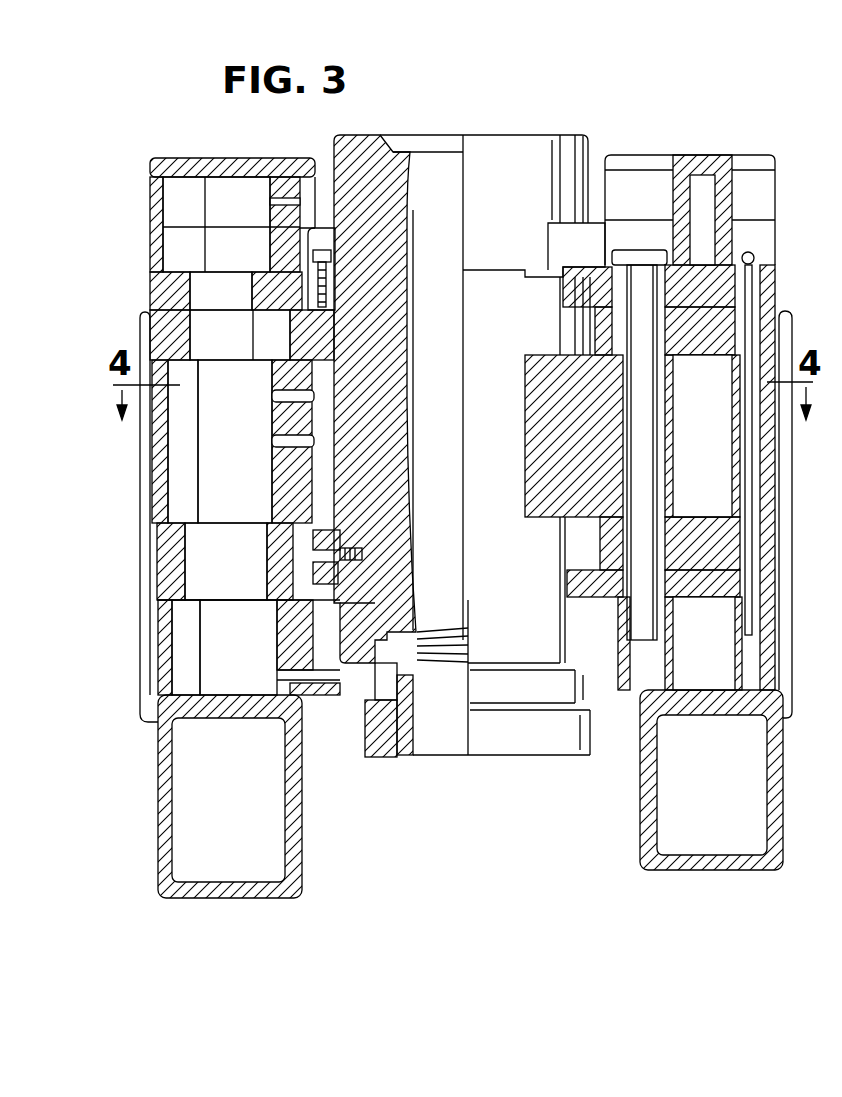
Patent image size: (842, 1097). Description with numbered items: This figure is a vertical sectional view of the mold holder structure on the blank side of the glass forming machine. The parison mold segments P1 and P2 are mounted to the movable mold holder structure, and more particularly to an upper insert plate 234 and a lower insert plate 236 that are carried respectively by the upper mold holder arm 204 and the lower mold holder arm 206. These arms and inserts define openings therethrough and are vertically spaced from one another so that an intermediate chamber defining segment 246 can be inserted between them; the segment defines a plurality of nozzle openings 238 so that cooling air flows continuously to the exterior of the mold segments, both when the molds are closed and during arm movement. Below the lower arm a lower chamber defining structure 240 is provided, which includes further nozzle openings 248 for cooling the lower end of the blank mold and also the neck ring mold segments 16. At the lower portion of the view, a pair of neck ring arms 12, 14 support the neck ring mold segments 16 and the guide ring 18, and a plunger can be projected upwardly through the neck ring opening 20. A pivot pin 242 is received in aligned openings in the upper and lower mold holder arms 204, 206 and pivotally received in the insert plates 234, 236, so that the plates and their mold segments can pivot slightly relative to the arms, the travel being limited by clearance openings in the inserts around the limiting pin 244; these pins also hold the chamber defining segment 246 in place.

The neck ring arm 12 is at (588, 752).
The neck ring arm 14 is at (365, 737).
The neck ring mold segments 16 is at (348, 658).
The guide ring 18 is at (418, 660).
The neck ring opening 20 is at (420, 745).
The upper mold holder arm 204 is at (152, 330).
The lower mold holder arm 206 is at (160, 545).
The upper insert plate 234 is at (152, 290).
The lower insert plate 236 is at (340, 582).
The nozzle openings 238 is at (314, 440).
The lower chamber defining structure 240 is at (138, 724).
The pivot pin 242 is at (275, 662).
The limiting pin 244 is at (755, 256).
The chamber defining segment 246 is at (155, 472).
The nozzle openings 248 is at (313, 682).
The parison mold segment P1 is at (395, 135).
The parison mold segment P2 is at (538, 135).